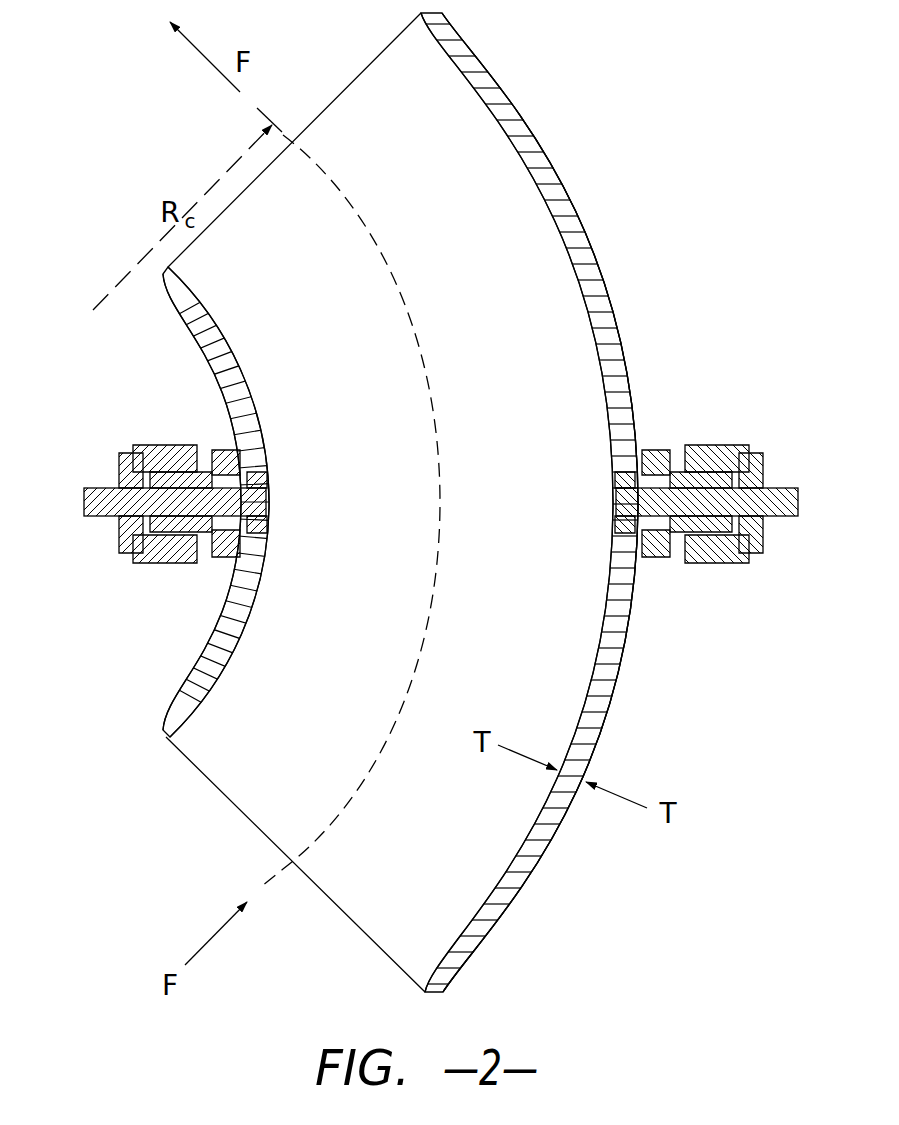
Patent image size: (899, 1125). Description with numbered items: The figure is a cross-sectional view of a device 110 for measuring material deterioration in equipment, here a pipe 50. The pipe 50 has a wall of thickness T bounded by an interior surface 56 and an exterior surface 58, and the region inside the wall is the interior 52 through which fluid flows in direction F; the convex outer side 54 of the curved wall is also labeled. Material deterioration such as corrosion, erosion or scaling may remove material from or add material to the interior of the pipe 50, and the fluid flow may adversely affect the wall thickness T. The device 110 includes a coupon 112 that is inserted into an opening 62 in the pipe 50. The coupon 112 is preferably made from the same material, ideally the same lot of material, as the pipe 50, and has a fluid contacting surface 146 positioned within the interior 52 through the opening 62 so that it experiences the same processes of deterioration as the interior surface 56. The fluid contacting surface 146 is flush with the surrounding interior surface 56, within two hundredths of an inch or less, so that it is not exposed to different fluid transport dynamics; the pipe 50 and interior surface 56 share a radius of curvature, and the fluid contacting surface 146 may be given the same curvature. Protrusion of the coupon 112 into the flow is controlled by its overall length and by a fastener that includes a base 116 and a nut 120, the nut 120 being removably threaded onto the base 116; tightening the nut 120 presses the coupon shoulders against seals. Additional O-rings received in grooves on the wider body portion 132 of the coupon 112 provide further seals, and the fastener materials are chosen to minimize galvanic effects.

The pipe 50 is at (586, 272).
The interior 52 is at (456, 264).
The second (convex) side of plate 54 is at (598, 140).
The interior surface 56 is at (493, 130).
The exterior surface 58 is at (501, 76).
The opening 62 is at (277, 510).
The device 110 is at (97, 560).
The coupon 112 is at (100, 495).
The base 116 is at (228, 452).
The nut 120 is at (150, 452).
The wider body portion 132 is at (224, 556).
The fluid contacting surface 146 is at (276, 498).